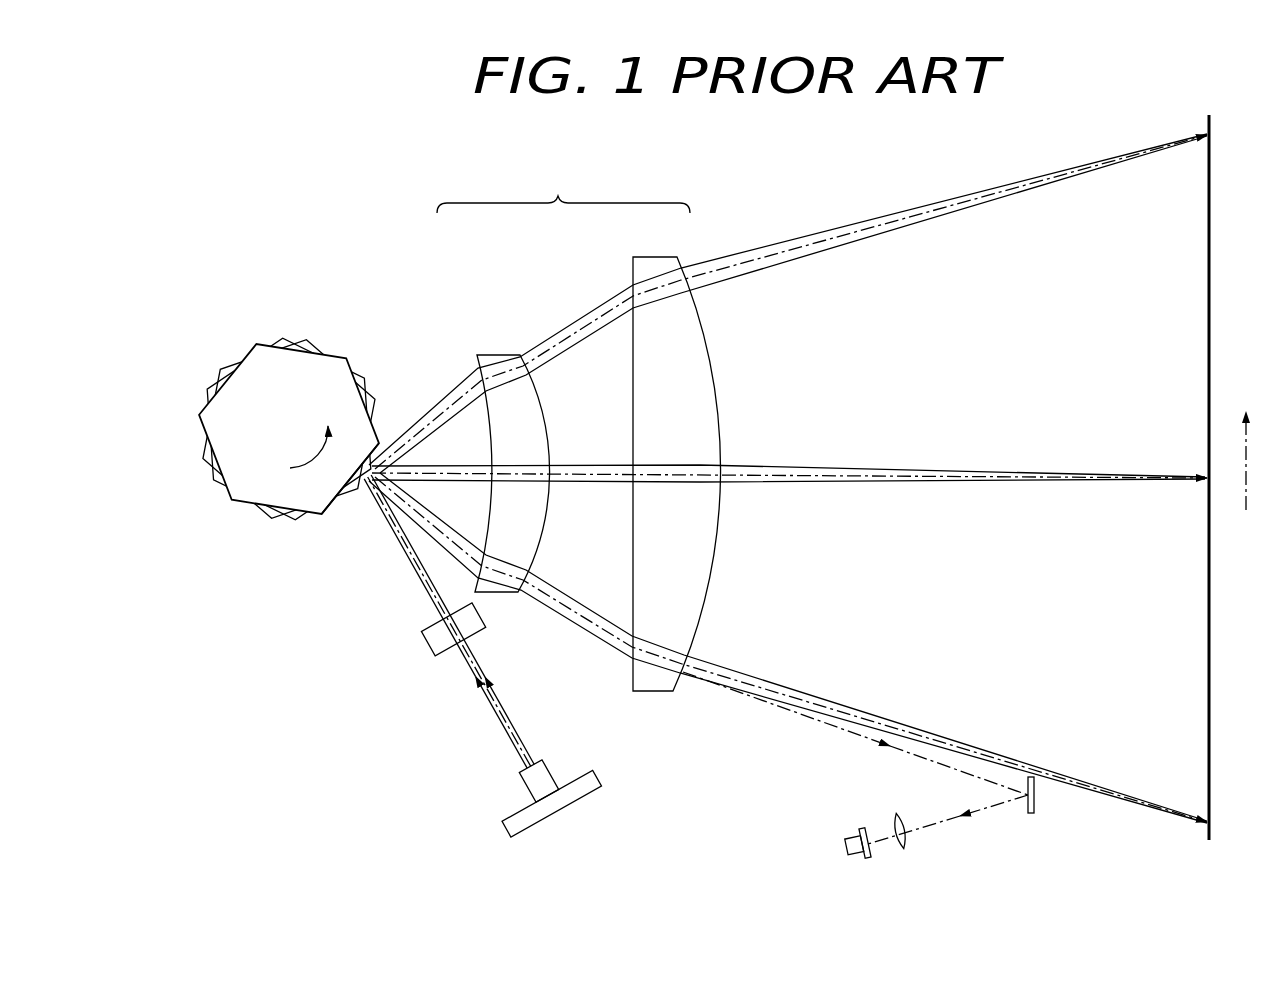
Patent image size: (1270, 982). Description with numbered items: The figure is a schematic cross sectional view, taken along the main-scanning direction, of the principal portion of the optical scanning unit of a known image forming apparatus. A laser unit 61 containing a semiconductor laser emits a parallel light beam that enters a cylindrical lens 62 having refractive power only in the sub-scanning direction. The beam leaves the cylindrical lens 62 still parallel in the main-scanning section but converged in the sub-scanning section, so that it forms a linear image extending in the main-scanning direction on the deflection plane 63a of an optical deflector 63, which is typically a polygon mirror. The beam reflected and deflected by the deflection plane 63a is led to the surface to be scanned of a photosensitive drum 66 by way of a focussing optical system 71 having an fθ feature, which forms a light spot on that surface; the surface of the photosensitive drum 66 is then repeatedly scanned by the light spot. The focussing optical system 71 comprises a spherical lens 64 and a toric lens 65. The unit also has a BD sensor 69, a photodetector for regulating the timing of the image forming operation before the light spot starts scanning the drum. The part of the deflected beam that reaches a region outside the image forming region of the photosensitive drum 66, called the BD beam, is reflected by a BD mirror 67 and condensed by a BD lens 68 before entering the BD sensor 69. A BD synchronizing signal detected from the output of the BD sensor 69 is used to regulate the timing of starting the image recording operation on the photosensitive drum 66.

The laser unit 61 is at (521, 790).
The cylindrical lens 62 is at (428, 648).
The optical deflector 63 is at (322, 347).
The deflection plane 63a is at (357, 490).
The spherical lens 64 is at (502, 356).
The toric lens 65 is at (668, 258).
The photosensitive drum 66 is at (1213, 224).
The BD mirror 67 is at (1036, 802).
The BD lens 68 is at (906, 848).
The BD sensor 69 is at (860, 856).
The focussing optical system 71 is at (563, 193).